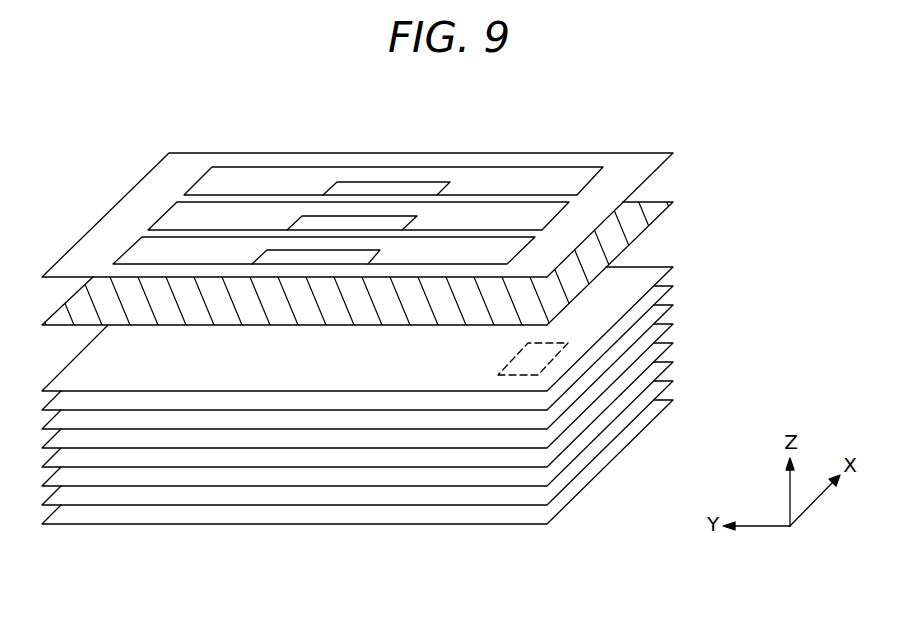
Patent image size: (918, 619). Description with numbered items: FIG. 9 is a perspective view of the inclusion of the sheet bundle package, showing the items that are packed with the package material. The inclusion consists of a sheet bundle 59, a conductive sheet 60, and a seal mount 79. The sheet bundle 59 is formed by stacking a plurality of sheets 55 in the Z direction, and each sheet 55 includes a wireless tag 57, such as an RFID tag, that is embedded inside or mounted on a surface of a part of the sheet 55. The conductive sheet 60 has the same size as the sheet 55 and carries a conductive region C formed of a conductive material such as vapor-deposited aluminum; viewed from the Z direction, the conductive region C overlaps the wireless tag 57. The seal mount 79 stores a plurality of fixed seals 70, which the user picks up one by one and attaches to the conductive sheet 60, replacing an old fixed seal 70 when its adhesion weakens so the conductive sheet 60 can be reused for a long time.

The fixed seal 70 is at (229, 245).
The seal mount 79 is at (632, 163).
The conductive sheet 60 is at (650, 212).
The sheet 55 is at (653, 273).
The sheet bundle 59 is at (690, 341).
The wireless tag 57 is at (518, 377).
The conductive region C is at (435, 307).